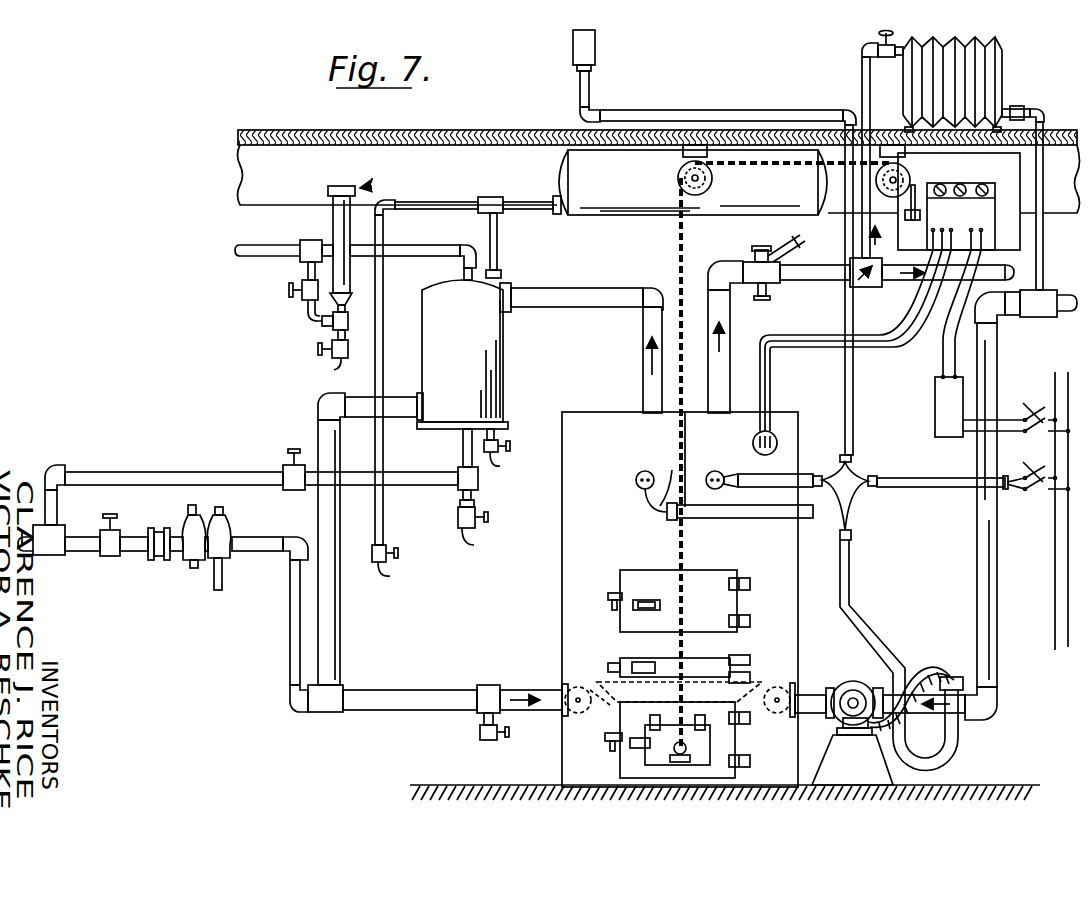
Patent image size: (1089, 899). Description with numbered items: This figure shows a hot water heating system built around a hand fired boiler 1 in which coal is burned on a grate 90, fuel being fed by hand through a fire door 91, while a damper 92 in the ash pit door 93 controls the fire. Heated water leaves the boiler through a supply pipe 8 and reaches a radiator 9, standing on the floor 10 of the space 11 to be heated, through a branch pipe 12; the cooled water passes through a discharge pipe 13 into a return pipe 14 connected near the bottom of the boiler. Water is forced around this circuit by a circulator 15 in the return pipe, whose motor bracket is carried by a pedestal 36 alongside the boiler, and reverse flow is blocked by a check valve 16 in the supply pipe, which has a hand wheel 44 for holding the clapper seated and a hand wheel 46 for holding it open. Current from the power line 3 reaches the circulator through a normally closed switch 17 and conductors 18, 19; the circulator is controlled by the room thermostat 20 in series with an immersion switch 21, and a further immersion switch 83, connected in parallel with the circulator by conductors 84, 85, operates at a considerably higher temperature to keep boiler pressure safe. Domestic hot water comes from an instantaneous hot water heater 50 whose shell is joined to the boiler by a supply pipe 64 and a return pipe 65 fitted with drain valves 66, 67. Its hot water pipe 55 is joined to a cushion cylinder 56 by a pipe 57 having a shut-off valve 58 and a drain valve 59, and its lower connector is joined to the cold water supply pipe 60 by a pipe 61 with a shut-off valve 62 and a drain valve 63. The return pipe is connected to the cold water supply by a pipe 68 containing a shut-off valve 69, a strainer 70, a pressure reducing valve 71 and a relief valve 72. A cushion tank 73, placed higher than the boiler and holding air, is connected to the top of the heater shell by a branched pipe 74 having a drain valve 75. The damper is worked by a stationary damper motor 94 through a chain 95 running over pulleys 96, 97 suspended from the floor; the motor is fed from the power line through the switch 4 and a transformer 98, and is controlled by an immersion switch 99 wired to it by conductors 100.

The boiler 1 is at (575, 554).
The power line 3 is at (1055, 650).
The manually operated switch 4 is at (1036, 402).
The supply pipe 8 is at (730, 345).
The radiator 9 is at (1002, 75).
The floor 10 is at (345, 128).
The space 11 is at (498, 132).
The branch pipe 12 is at (861, 82).
The discharge pipe 13 is at (1043, 246).
The return pipe 14 is at (977, 571).
The circulator 15 is at (850, 682).
The check valve 16 is at (777, 284).
The manually operated switch 17 is at (1036, 498).
The conductor 18 is at (840, 536).
The conductor 19 is at (852, 510).
The room thermostat 20 is at (595, 46).
The thermostatic immersion switch 21 is at (716, 470).
The pedestal 36 is at (852, 751).
The hand wheel 44 is at (798, 243).
The hand wheel 46 is at (760, 300).
The instantaneous hot water heater 50 is at (462, 354).
The hot water pipe 55 is at (248, 243).
The cushion cylinder 56 is at (333, 220).
The pipe 57 is at (322, 320).
The shut-off valve 58 is at (302, 282).
The drain valve 59 is at (334, 370).
The cold water supply pipe 60 is at (28, 530).
The pipe 61 is at (136, 468).
The shut-off valve 62 is at (284, 472).
The drain valve 63 is at (478, 525).
The supply pipe 64 is at (585, 290).
The return pipe 65 is at (340, 622).
The drain valve 66 is at (503, 454).
The drain valve 67 is at (480, 733).
The pipe 68 is at (290, 622).
The shut-off valve 69 is at (110, 552).
The strainer 70 is at (160, 528).
The pressure reducing valve 71 is at (192, 560).
The relief valve 72 is at (228, 524).
The cushion tank 73 is at (562, 172).
The branched pipe 74 is at (532, 212).
The drain valve 75 is at (393, 567).
The thermostatic immersion switch 83 is at (636, 480).
The conductor 84 is at (660, 512).
The conductor 85 is at (658, 486).
The grate 90 is at (613, 692).
The fire door 91 is at (620, 582).
The damper 92 is at (660, 752).
The door 93 is at (737, 740).
The damper motor 94 is at (959, 201).
The chain 95 is at (678, 248).
The pulley 96 is at (713, 179).
The pulley 97 is at (912, 170).
The transformer 98 is at (934, 398).
The thermostatic immersion switch 99 is at (752, 440).
The conductors 100 is at (906, 345).